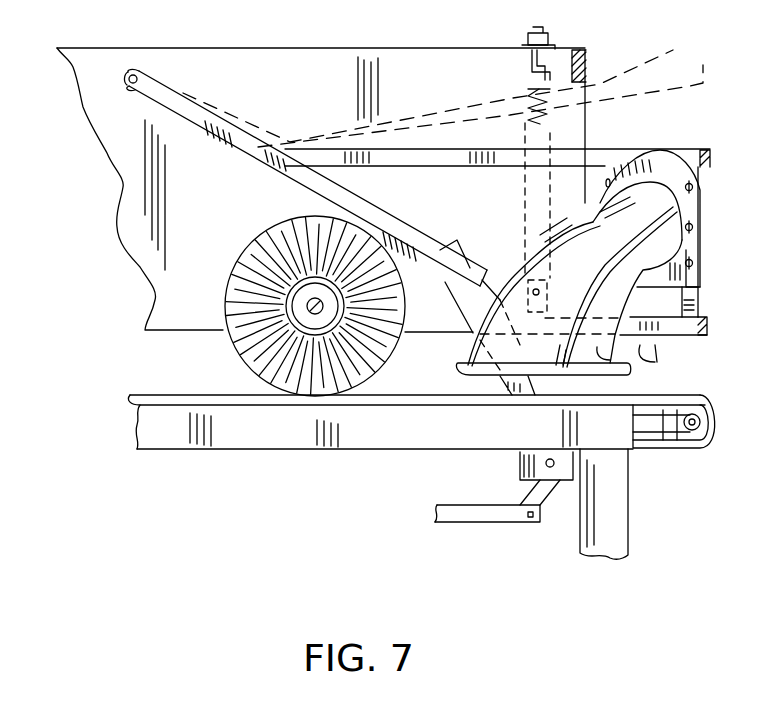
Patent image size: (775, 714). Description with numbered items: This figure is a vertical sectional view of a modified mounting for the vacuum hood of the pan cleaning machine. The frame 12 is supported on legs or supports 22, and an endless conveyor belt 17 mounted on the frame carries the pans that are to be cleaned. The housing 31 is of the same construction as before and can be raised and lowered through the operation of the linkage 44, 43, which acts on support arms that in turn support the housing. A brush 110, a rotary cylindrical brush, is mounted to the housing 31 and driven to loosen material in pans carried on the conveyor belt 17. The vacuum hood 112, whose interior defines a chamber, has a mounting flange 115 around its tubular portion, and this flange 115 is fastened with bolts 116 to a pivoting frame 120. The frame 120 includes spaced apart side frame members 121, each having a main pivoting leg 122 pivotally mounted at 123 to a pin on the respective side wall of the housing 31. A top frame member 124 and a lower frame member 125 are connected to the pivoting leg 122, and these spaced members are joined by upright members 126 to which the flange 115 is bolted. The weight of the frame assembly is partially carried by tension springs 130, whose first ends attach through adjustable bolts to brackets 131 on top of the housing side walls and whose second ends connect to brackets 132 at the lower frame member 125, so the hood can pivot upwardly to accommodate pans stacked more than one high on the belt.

The housing 31 is at (215, 60).
The pivot 123 is at (143, 77).
The side frame members 121 is at (213, 123).
The main pivoting leg 122 is at (458, 270).
The brush 110 is at (257, 242).
The top frame member 124 is at (580, 157).
The tension springs 130 is at (527, 107).
The brackets 131 is at (550, 43).
The pivoting frame 120 is at (680, 148).
The mounting flange 115 is at (693, 205).
The vacuum hood 112 is at (657, 242).
The bolts 116 is at (694, 263).
The upright members 126 is at (687, 304).
The lower frame member 125 is at (700, 336).
The brackets 132 is at (568, 284).
The frame 12 is at (413, 443).
The endless conveyor belt 17 is at (670, 397).
The legs or supports 22 is at (628, 518).
The linkage 43 is at (545, 500).
The linkage 44 is at (493, 522).